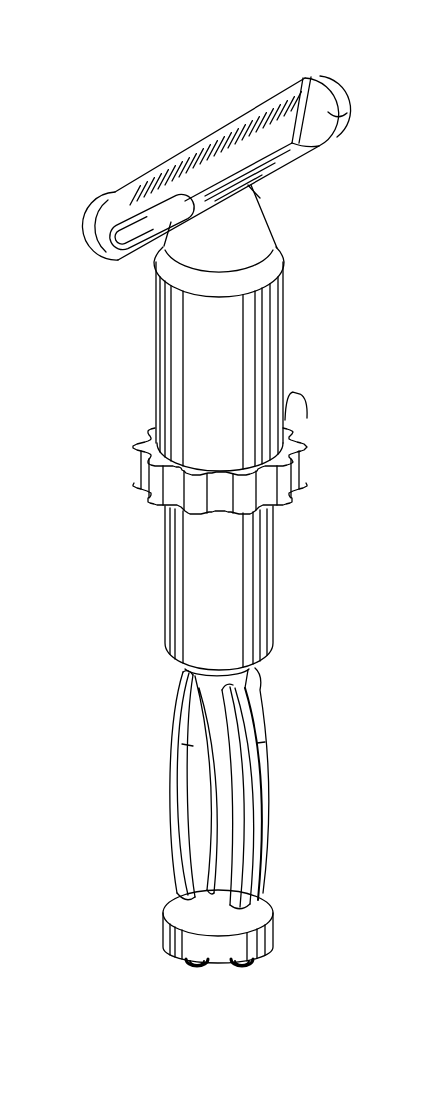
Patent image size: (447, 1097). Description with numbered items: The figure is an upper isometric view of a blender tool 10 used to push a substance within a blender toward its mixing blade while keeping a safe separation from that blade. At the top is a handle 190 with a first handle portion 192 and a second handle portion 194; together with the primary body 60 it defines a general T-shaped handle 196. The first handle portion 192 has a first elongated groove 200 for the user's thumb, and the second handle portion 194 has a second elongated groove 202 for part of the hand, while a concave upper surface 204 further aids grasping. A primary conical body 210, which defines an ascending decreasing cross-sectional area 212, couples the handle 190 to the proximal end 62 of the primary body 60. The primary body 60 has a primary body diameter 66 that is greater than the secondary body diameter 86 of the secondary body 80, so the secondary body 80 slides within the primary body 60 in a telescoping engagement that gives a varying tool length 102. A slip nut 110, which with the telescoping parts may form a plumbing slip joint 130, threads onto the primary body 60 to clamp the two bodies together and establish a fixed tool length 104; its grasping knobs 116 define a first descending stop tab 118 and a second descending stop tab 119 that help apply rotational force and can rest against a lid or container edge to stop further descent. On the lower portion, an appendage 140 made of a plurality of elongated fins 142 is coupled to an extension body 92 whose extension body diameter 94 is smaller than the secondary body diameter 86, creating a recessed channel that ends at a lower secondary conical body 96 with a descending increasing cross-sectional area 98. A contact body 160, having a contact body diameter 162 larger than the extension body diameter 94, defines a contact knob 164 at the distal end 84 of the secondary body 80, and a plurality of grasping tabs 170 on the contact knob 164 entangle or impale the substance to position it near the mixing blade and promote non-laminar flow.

The blender tool 10 is at (305, 80).
The handle 190 is at (170, 158).
The first handle portion 192 is at (338, 78).
The second handle portion 194 is at (87, 210).
The general T-shaped handle 196 is at (137, 173).
The first elongated groove 200 is at (332, 122).
The second elongated groove 202 is at (140, 247).
The concave upper surface 204 is at (213, 148).
The primary conical body 210 is at (256, 196).
The ascending decreasing cross-sectional area 212 is at (274, 222).
The proximal end 62 is at (285, 262).
The primary body 60 is at (156, 384).
The primary body diameter 66 is at (155, 344).
The fixed tool length 104 is at (285, 303).
The slip nut 110 is at (300, 413).
The first descending stop tab 118 is at (292, 394).
The grasping knobs 116 is at (304, 452).
The plumbing slip joint 130 is at (142, 450).
The second descending stop tab 119 is at (145, 498).
The secondary body 80 is at (275, 562).
The varying tool length 102 is at (275, 525).
The secondary body diameter 86 is at (275, 598).
The extension body 92 is at (215, 712).
The extension body diameter 94 is at (225, 815).
The elongated fins 142 is at (176, 772).
The appendage 140 is at (268, 775).
The descending increasing cross-sectional area 98 is at (177, 895).
The lower secondary conical body 96 is at (262, 890).
The distal end 84 is at (160, 960).
The contact body 160 is at (272, 922).
The contact knob 164 is at (165, 928).
The contact body diameter 162 is at (275, 932).
The grasping tabs 170 is at (248, 965).